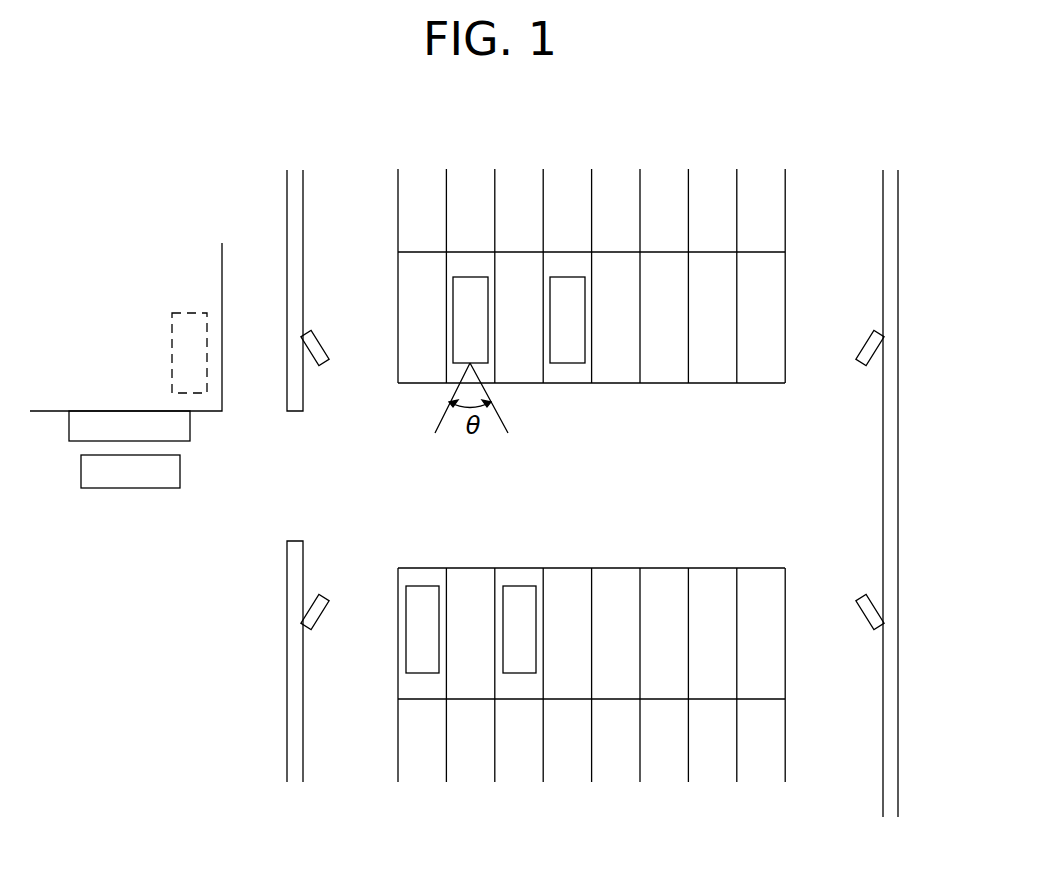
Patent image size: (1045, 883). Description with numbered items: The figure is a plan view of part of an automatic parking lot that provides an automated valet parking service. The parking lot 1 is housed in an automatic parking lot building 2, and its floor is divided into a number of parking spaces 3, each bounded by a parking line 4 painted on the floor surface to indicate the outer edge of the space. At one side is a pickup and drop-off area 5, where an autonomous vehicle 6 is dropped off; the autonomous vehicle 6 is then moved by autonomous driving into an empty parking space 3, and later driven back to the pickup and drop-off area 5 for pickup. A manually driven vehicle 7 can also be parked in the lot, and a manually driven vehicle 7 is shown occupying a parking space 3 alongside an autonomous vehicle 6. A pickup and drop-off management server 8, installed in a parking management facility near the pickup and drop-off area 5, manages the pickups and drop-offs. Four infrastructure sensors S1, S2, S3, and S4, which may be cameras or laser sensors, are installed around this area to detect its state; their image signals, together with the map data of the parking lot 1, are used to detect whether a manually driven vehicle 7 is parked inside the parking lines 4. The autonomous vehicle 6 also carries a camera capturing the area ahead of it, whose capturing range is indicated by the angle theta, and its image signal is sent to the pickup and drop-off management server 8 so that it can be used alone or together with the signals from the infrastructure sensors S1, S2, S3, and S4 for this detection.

The parking lot 1 is at (680, 152).
The automatic parking lot building 2 is at (910, 188).
The parking space 3 is at (673, 372).
The parking line 4 is at (640, 360).
The pickup and drop-off area 5 is at (118, 427).
The autonomous vehicle 6 is at (470, 287).
The manually driven vehicle 7 is at (568, 287).
The pickup and drop-off management server 8 is at (194, 311).
The infrastructure sensor S1 is at (310, 346).
The infrastructure sensor S2 is at (310, 609).
The infrastructure sensor S3 is at (875, 346).
The infrastructure sensor S4 is at (875, 609).